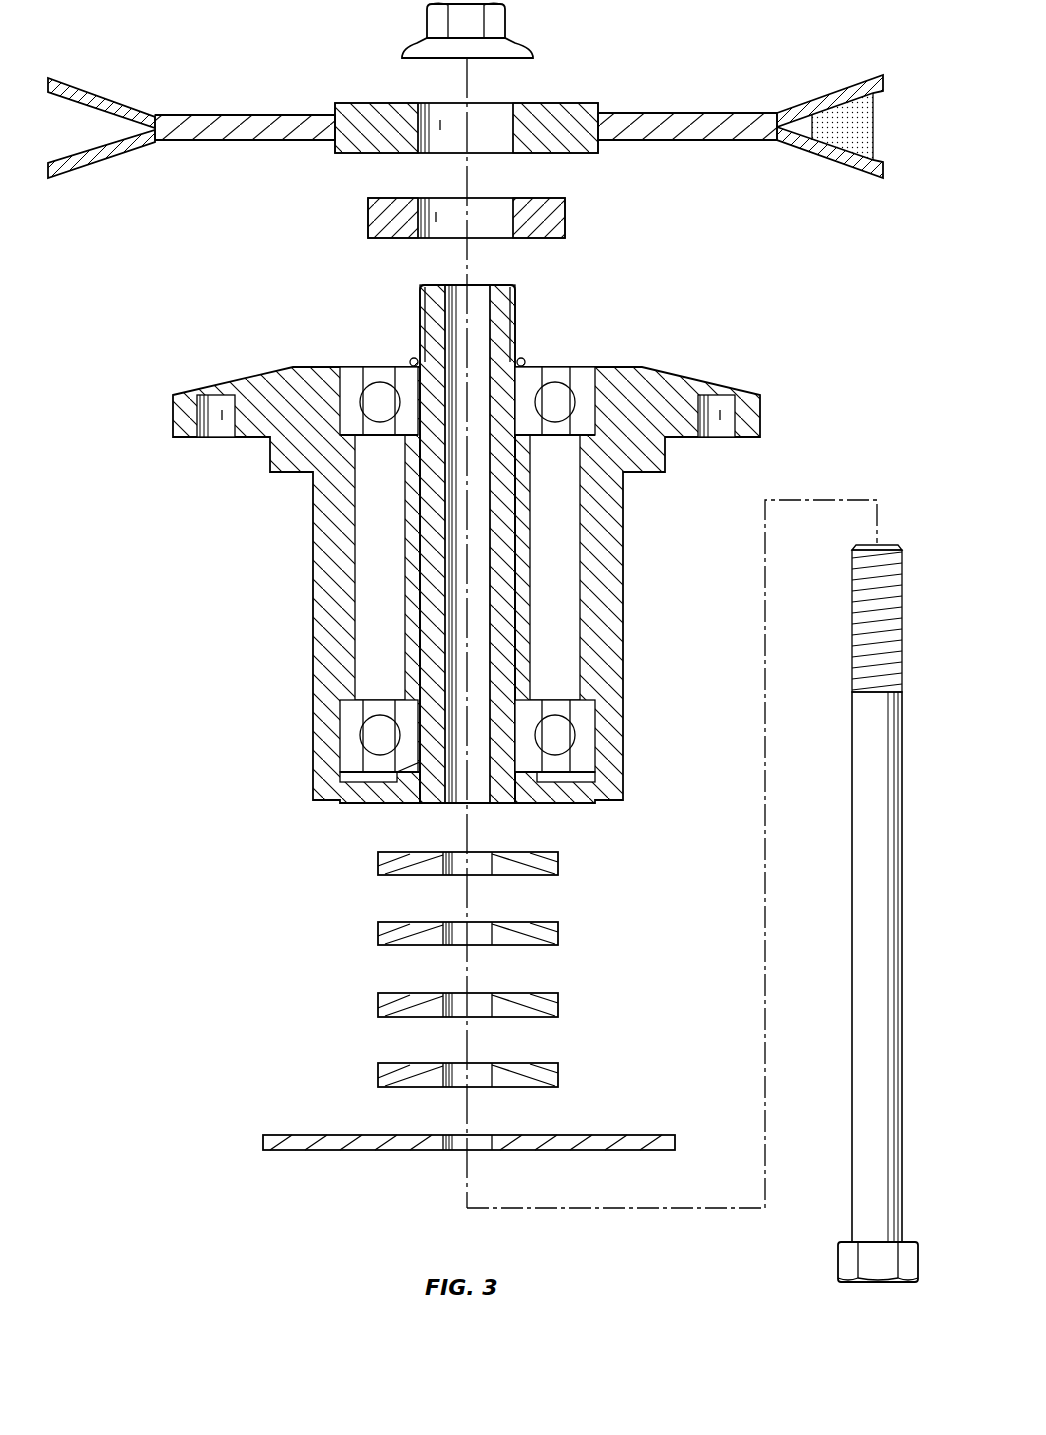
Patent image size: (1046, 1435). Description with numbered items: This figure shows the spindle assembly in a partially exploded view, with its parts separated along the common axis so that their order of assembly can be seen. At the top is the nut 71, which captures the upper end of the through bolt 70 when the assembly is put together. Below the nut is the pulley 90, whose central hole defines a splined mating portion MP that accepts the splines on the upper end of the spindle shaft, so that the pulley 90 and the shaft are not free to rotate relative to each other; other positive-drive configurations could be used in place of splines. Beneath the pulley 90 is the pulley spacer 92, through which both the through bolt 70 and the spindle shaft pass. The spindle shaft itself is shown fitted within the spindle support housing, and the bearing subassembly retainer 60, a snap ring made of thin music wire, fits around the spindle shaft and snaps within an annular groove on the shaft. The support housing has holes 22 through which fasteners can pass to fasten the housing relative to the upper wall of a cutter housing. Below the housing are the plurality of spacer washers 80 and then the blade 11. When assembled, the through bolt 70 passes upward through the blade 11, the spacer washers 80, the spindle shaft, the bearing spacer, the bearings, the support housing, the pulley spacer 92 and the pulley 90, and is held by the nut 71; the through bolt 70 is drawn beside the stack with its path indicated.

The nut 71 is at (514, 47).
The pulley 90 is at (363, 143).
The splined mating portion MP is at (513, 138).
The pulley spacer 92 is at (390, 215).
The bearing subassembly retainer 60 is at (410, 361).
The holes 22 is at (215, 425).
The spacer washers 80 is at (558, 862).
The blade 11 is at (314, 1143).
The through bolt 70 is at (865, 760).